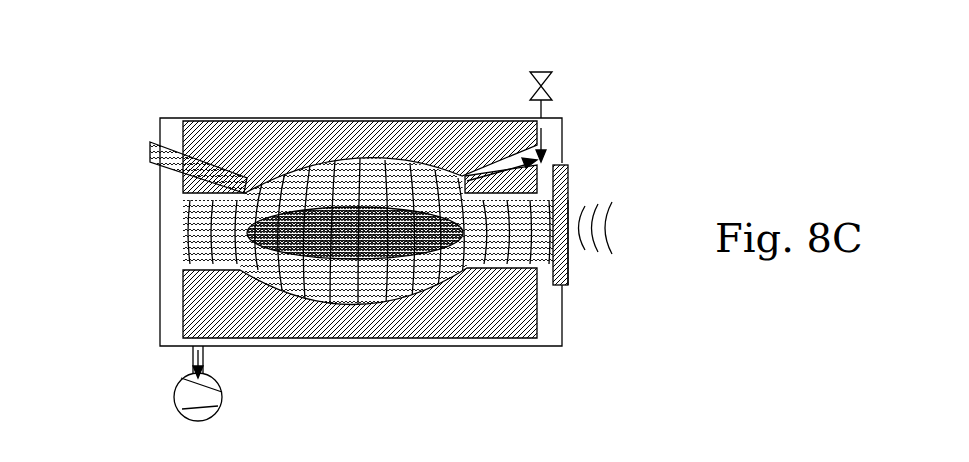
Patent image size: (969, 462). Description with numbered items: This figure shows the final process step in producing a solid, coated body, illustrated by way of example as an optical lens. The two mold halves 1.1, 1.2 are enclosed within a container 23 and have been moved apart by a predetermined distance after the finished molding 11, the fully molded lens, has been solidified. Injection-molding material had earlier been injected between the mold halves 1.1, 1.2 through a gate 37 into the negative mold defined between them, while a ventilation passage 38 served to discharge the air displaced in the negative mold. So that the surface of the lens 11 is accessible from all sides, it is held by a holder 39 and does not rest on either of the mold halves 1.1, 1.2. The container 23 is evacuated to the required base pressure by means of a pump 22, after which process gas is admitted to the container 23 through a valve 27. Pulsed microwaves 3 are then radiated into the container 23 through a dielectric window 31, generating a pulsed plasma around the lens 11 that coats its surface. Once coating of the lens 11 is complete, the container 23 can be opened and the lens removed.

The mold half 1.1 is at (473, 132).
The mold half 1.2 is at (478, 334).
The pulsed microwaves 3 is at (606, 229).
The molding 11 is at (315, 282).
The pump 22 is at (177, 405).
The container 23 is at (158, 297).
The valve 27 is at (554, 84).
The dielectric window 31 is at (569, 270).
The gate 37 is at (231, 174).
The ventilation passage 38 is at (556, 163).
The holder 39 is at (193, 238).